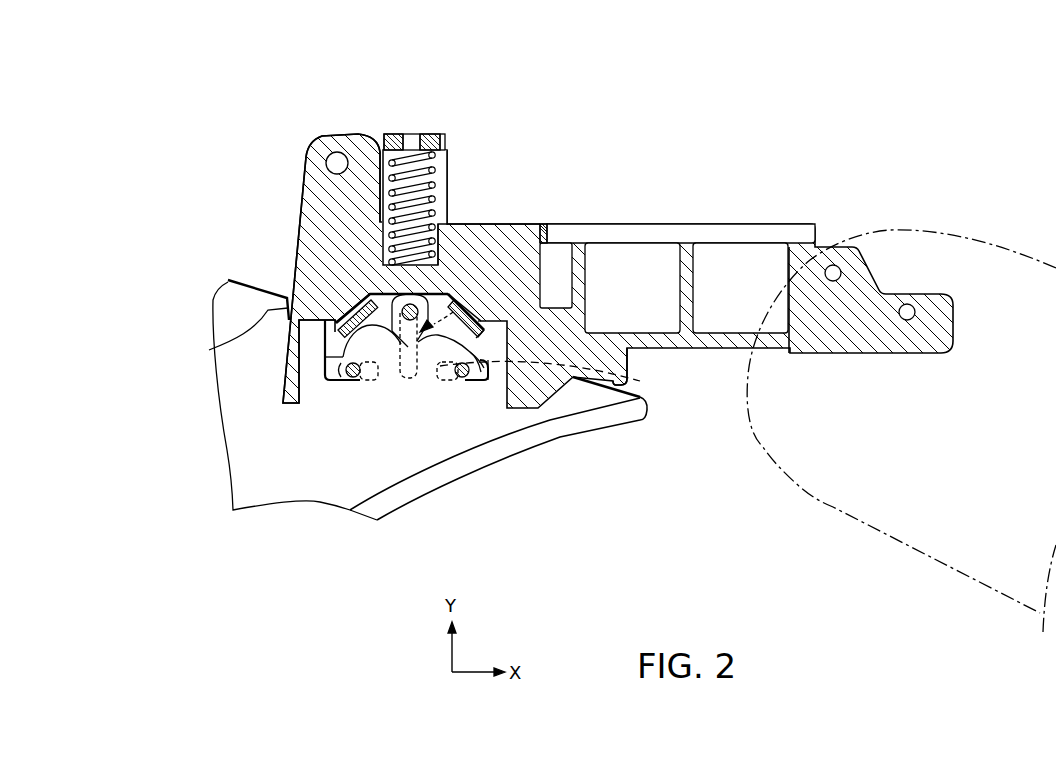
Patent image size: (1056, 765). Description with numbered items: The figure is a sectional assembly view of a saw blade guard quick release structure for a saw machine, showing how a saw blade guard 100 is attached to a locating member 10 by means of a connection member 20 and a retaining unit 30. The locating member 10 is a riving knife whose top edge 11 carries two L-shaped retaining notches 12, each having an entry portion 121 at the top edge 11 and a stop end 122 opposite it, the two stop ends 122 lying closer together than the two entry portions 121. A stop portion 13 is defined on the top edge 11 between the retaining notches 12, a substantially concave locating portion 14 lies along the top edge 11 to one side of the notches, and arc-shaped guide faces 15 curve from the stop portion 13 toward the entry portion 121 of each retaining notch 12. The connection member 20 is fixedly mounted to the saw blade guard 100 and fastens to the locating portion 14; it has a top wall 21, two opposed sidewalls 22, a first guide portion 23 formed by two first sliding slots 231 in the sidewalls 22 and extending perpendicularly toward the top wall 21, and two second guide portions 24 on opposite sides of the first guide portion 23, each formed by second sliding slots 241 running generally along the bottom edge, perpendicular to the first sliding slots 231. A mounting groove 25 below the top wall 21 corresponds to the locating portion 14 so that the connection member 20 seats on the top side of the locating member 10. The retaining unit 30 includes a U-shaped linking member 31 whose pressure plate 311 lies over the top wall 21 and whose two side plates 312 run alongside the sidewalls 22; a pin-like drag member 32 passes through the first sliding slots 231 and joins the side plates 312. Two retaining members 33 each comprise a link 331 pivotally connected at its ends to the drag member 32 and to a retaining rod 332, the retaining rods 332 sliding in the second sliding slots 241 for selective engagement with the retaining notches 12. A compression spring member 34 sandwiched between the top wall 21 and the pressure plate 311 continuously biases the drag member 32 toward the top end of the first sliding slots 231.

The locating member 10 is at (226, 305).
The top edge 11 is at (250, 279).
The retaining notches 12 is at (322, 366).
The entry portion 121 is at (490, 358).
The stop end 122 is at (453, 343).
The stop portion 13 is at (401, 344).
The locating portion 14 is at (233, 335).
The guide faces 15 is at (455, 305).
The connection member 20 is at (525, 216).
The top wall 21 is at (367, 241).
The sidewalls 22 is at (498, 333).
The first guide portion 23 is at (443, 263).
The first sliding slots 231 is at (462, 300).
The second guide portions 24 is at (449, 382).
The second sliding slots 241 is at (368, 382).
The mounting groove 25 is at (551, 378).
The retaining unit 30 is at (398, 126).
The linking member 31 is at (435, 134).
The pressure plate 311 is at (388, 135).
The side plates 312 is at (447, 167).
The drag member 32 is at (350, 263).
The retaining members 33 is at (543, 223).
The link 331 is at (483, 313).
The retaining rod 332 is at (347, 375).
The spring member 34 is at (380, 177).
The saw blade guard 100 is at (906, 218).